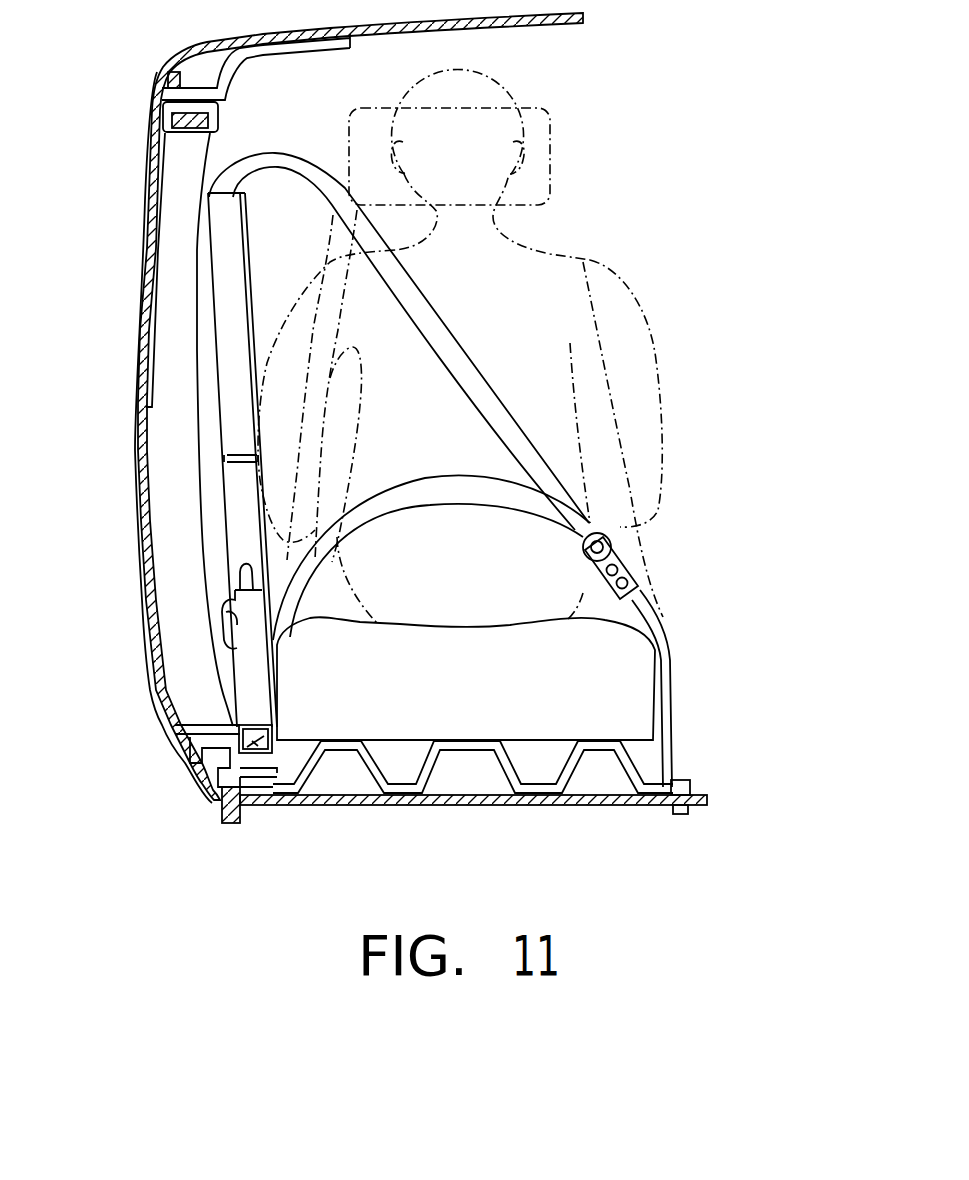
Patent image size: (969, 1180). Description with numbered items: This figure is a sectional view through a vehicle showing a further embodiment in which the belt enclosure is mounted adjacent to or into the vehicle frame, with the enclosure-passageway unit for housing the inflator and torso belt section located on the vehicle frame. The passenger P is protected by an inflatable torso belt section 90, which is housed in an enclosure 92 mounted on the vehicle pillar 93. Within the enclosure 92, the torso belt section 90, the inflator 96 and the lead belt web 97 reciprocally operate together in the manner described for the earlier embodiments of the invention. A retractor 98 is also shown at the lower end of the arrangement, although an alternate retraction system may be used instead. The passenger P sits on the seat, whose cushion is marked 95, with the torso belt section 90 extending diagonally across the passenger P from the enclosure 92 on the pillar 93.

The inflatable torso belt section 90 is at (488, 403).
The enclosure 92 is at (215, 248).
The vehicle pillar 93 is at (173, 333).
The seat cushion 95 is at (490, 700).
The inflator 96 is at (240, 515).
The lead belt web 97 is at (250, 680).
The retractor 98 is at (245, 757).
The passenger P is at (533, 222).